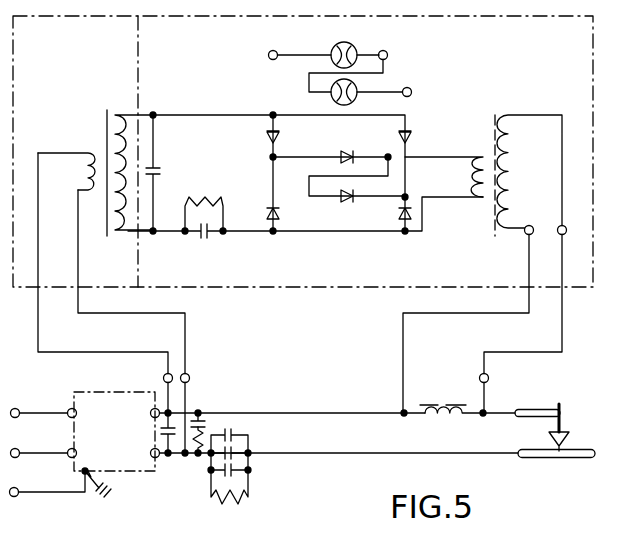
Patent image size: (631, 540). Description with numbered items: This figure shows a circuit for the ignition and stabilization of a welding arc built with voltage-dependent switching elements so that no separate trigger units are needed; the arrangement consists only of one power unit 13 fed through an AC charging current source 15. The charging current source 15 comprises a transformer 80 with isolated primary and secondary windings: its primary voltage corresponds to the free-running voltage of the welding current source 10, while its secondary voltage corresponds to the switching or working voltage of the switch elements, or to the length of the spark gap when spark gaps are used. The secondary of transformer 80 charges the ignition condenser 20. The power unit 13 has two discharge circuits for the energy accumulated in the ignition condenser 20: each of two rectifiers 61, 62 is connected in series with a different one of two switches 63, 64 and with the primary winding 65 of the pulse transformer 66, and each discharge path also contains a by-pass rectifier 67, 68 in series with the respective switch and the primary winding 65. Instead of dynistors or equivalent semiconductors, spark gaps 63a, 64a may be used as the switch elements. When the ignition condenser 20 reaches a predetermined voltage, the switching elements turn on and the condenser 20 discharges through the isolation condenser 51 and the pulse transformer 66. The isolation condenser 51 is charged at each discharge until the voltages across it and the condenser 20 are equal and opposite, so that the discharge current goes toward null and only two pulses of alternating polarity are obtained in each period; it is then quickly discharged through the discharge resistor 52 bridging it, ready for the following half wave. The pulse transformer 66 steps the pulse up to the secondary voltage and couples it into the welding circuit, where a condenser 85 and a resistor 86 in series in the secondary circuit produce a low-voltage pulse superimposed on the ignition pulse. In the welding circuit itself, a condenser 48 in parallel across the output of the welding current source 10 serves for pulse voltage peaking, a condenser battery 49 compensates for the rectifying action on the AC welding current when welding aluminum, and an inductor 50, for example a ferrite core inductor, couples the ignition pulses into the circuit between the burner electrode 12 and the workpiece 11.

The charging current source 15 is at (72, 88).
The power unit 13 is at (569, 88).
The transformer 80 is at (107, 147).
The ignition condenser 20 is at (160, 173).
The discharge resistor 52 is at (206, 196).
The isolation condenser 51 is at (205, 236).
The spark gap 63a is at (340, 42).
The spark gap 64a is at (360, 87).
The rectifier 61 is at (280, 134).
The rectifier 62 is at (410, 137).
The switch 63 is at (347, 152).
The switch 64 is at (347, 200).
The by-pass rectifier 67 is at (280, 215).
The by-pass rectifier 68 is at (401, 215).
The primary winding 65 is at (476, 200).
The pulse transformer 66 is at (494, 143).
The welding current source 10 is at (112, 462).
The condenser 48 is at (177, 437).
The condenser 85 is at (200, 418).
The resistor 86 is at (203, 456).
The condenser battery 49 is at (250, 472).
The inductor 50 is at (438, 404).
The burner electrode 12 is at (561, 413).
The workpiece 11 is at (552, 459).